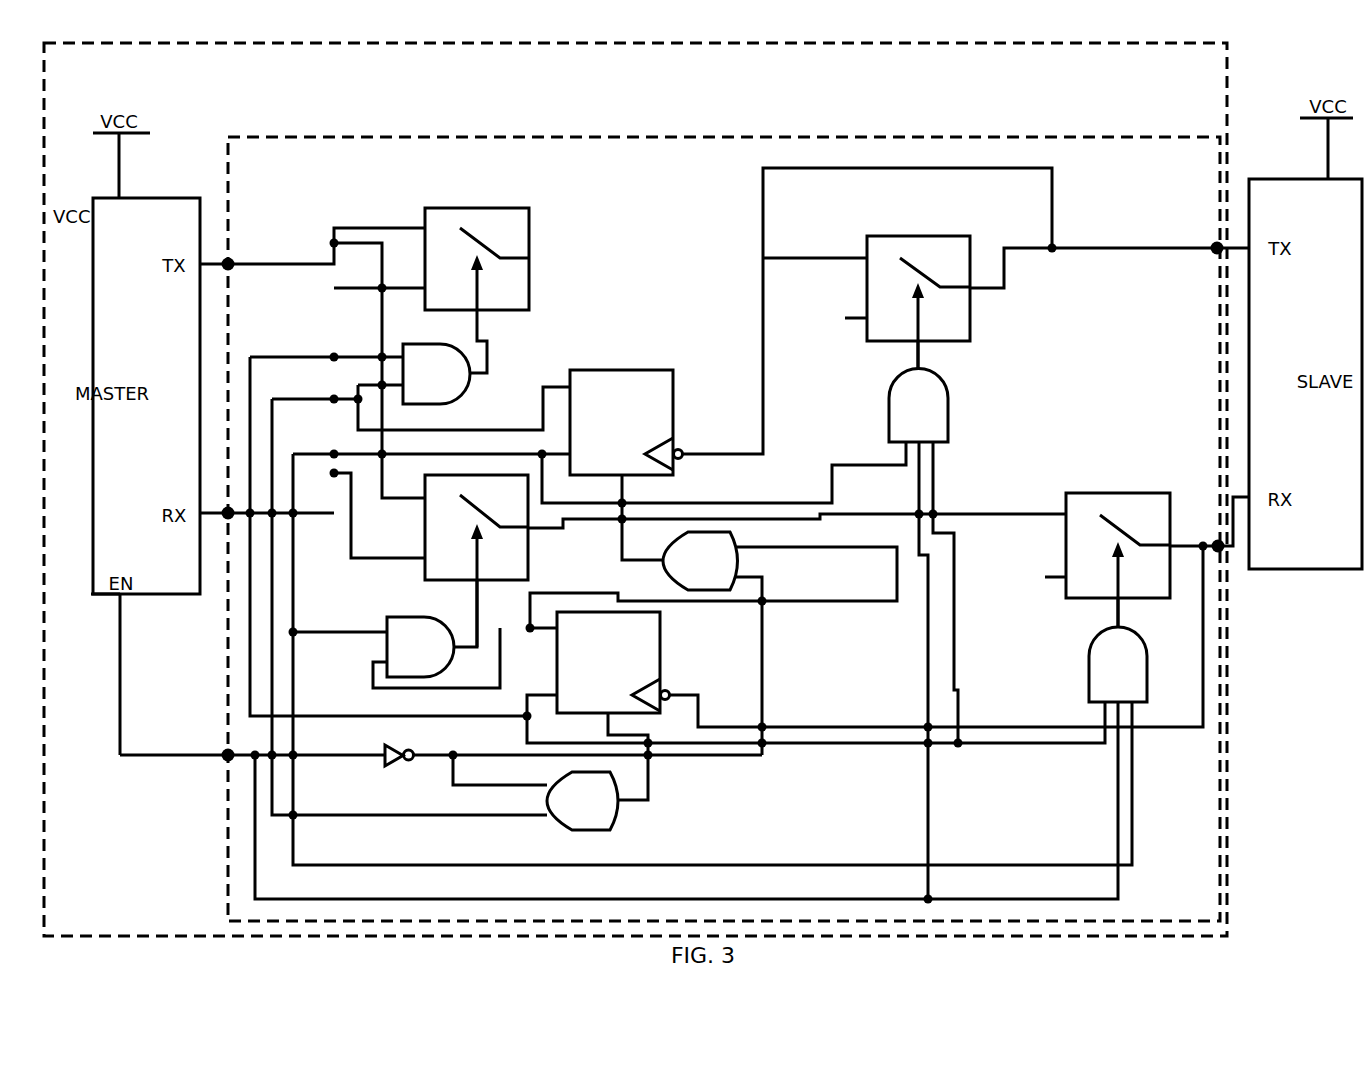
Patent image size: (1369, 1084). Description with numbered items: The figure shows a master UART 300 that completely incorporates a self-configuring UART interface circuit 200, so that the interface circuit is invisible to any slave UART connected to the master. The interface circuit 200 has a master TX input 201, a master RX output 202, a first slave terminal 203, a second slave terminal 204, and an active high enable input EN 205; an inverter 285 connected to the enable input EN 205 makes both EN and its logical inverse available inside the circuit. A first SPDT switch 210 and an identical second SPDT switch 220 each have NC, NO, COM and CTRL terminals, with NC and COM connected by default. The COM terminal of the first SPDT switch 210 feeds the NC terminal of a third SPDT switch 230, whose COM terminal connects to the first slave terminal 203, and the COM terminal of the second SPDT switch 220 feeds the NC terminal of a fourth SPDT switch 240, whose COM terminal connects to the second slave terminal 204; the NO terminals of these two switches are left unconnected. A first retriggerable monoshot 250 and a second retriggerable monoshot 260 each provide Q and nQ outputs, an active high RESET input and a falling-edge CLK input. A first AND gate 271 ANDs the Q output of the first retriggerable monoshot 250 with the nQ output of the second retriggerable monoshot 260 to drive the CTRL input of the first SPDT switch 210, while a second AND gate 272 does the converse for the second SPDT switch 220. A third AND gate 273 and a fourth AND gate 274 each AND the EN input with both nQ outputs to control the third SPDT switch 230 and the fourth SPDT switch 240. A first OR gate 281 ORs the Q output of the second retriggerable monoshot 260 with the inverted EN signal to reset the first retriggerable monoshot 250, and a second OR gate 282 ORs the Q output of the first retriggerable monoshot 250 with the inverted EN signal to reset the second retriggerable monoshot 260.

The self-configuring UART interface circuit 200 is at (323, 137).
The master TX input 201 is at (230, 262).
The master RX output 202 is at (227, 516).
The first slave terminal 203 is at (1215, 251).
The second slave terminal 204 is at (1220, 549).
The enable input EN 205 is at (227, 758).
The first single-pole, double-throw switch 210 is at (477, 259).
The second SPDT switch 220 is at (476, 561).
The third SPDT switch 230 is at (918, 302).
The fourth SPDT switch 240 is at (1118, 560).
The first retriggerable monoshot 250 is at (626, 422).
The second retriggerable monoshot 260 is at (613, 662).
The first AND gate 271 is at (475, 357).
The second AND gate 272 is at (415, 615).
The third AND gate 273 is at (948, 402).
The fourth AND gate 274 is at (1088, 663).
The first OR gate 281 is at (727, 556).
The second OR gate 282 is at (608, 810).
The inverter 285 is at (392, 765).
The master UART 300 is at (635, 489).